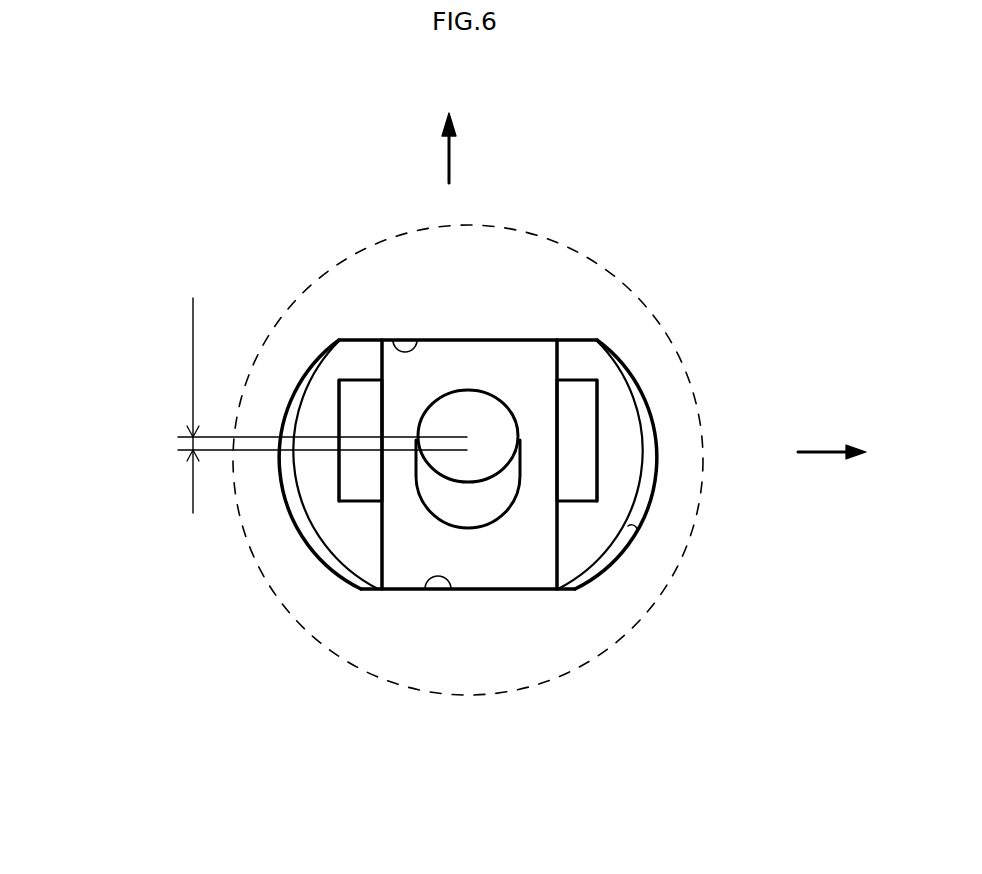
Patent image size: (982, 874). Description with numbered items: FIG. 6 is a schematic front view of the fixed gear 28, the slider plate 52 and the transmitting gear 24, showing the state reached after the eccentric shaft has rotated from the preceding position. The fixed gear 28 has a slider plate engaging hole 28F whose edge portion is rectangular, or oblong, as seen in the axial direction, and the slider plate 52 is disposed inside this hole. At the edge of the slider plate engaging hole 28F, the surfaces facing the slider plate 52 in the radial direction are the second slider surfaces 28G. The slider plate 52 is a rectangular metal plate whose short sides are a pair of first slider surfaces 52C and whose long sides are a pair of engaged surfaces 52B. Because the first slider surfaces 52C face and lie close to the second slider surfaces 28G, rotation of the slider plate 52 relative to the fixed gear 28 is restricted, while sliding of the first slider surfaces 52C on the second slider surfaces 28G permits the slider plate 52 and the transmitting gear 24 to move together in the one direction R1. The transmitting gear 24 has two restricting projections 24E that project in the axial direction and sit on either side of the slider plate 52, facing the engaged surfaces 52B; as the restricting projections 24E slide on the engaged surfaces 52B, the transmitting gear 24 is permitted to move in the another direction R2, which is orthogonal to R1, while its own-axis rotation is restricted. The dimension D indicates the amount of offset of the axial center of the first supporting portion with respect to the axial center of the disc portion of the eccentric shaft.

The transmitting gear 24 is at (310, 521).
The restricting projections 24E is at (338, 480).
The fixed gear 28 is at (542, 283).
The slider plate engaging hole 28F is at (636, 540).
The second slider surfaces 28G is at (397, 345).
The slider plate 52 is at (533, 553).
The engaged surfaces 52B is at (367, 405).
The first slider surfaces 52C is at (527, 340).
The dimension D is at (193, 352).
The one direction R1 is at (825, 452).
The another direction R2 is at (447, 162).